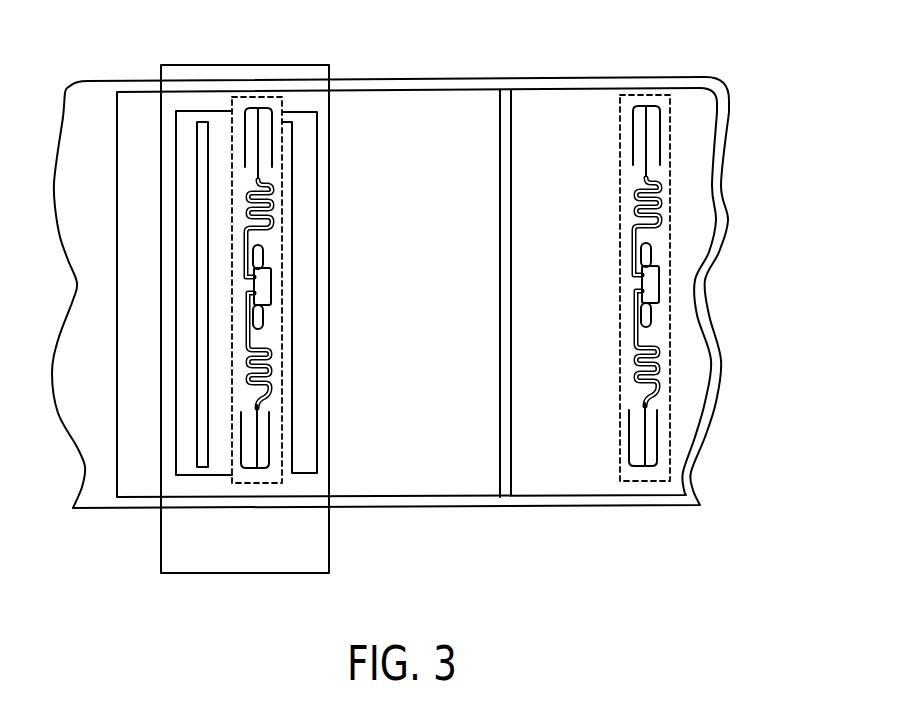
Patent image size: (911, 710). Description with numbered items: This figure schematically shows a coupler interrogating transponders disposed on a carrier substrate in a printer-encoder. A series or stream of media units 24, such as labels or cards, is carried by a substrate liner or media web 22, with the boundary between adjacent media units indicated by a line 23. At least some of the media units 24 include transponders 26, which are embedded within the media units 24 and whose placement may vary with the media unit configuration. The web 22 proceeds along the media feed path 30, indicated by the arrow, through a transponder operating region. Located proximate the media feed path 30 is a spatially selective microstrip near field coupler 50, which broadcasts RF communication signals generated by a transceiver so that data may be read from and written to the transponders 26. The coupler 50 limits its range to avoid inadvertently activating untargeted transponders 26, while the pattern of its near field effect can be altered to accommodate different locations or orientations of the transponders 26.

The media web 22 is at (608, 559).
The line of separation between panels 23 is at (500, 500).
The media units 24 is at (467, 133).
The transponders 26 is at (262, 262).
The media feed path 30 is at (618, 49).
The near field coupler 50 is at (187, 457).